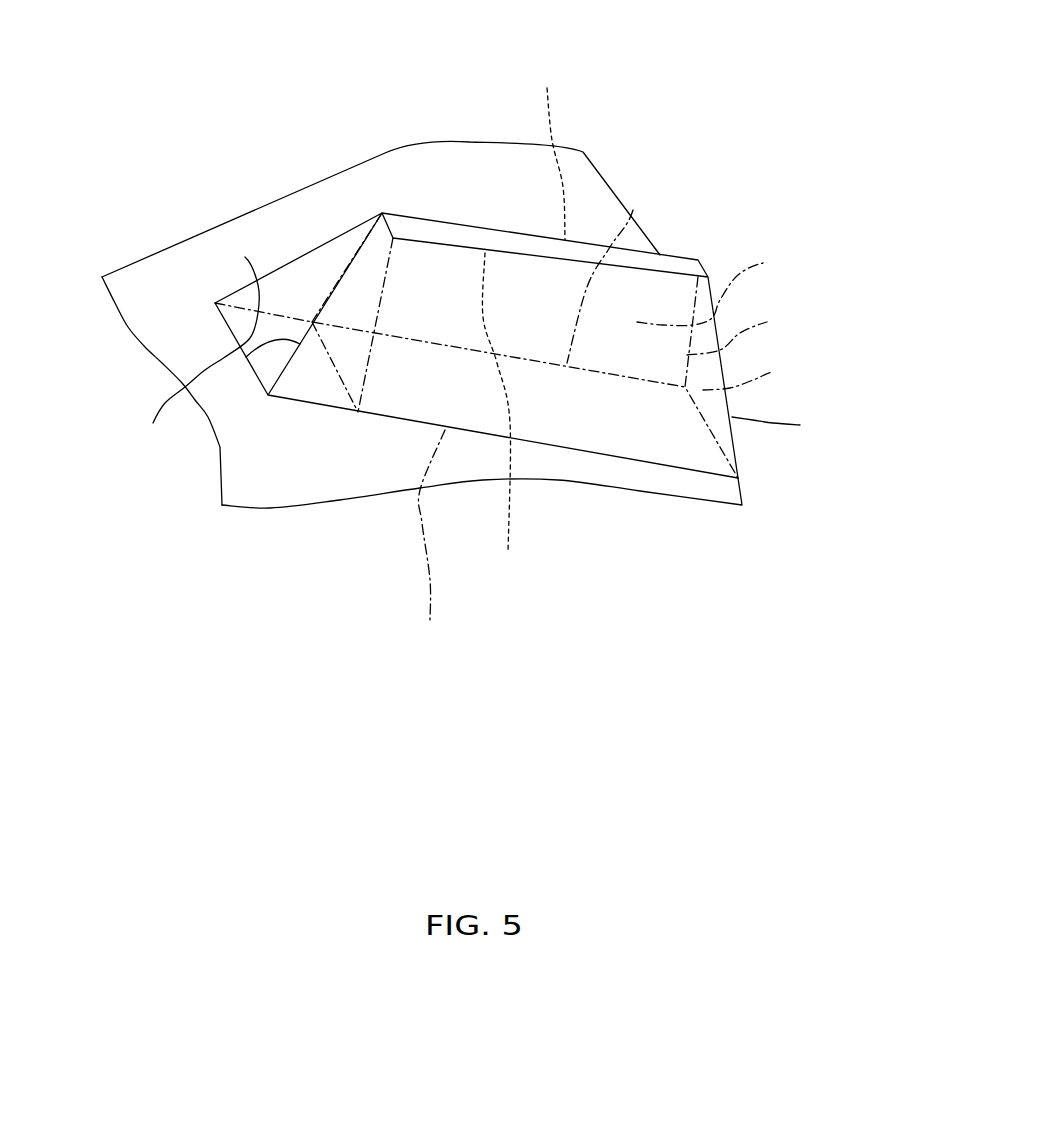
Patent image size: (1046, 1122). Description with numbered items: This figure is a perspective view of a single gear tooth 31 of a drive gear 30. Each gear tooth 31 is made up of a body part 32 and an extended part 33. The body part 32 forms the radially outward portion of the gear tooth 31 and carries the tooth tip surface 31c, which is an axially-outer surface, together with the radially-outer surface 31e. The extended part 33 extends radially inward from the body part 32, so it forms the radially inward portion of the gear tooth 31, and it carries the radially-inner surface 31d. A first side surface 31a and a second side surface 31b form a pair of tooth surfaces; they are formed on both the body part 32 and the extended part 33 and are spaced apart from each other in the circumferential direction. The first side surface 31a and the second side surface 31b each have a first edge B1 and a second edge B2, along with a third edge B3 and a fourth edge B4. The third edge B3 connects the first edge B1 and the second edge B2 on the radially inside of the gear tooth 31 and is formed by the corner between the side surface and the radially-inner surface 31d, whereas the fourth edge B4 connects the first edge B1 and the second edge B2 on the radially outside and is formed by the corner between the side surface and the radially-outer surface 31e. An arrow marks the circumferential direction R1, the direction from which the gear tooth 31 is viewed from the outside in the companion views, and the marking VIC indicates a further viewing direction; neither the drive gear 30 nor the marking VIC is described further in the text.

The tool body 30 is at (282, 480).
The gear tooth 31 is at (698, 230).
The first side surface 31a is at (588, 418).
The second side surface 31b is at (763, 263).
The tooth tip surface 31c is at (460, 237).
The radially-inner surface 31d is at (245, 257).
The radially-outer surface 31e is at (773, 372).
The body part 32 is at (510, 213).
The extended part 33 is at (272, 250).
The first edge B1 is at (633, 210).
The second edge B2 is at (525, 327).
The third edge B3 is at (153, 423).
The fourth edge B4 is at (767, 322).
The circumferential direction R1 is at (602, 623).
The view direction VIC is at (78, 235).